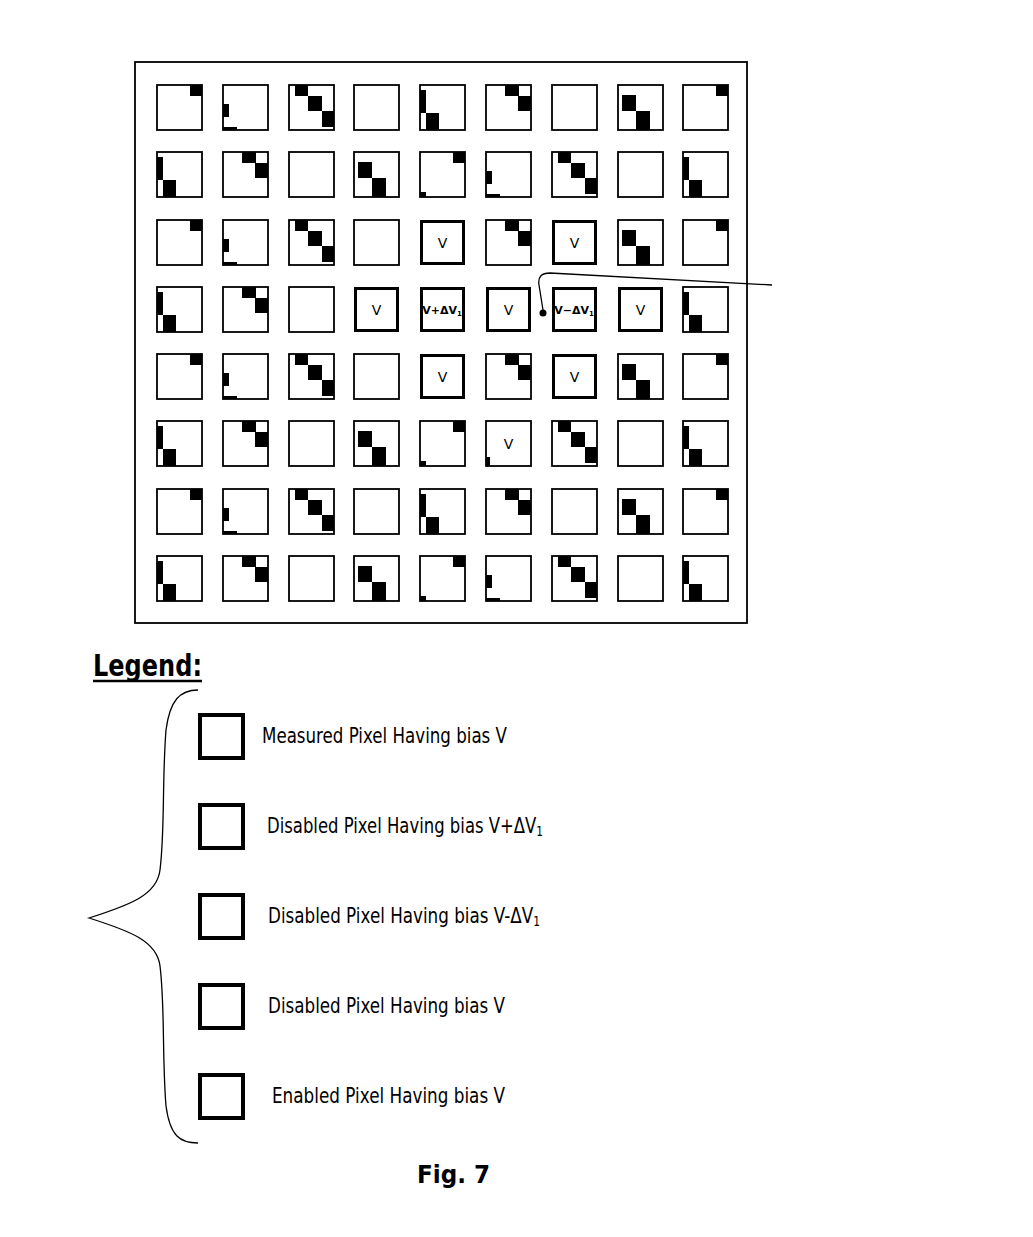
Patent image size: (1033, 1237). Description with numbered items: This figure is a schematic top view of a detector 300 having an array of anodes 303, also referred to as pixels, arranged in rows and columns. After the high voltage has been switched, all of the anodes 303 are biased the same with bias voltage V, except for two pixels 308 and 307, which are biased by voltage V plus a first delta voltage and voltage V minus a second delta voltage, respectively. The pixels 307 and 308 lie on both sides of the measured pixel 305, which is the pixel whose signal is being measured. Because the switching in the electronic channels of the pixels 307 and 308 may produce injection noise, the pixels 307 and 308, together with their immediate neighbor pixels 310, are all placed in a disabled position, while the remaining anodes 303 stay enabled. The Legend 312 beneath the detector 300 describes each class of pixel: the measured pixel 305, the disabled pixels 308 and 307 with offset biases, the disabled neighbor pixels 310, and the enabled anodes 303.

The detector 300 is at (488, 62).
The anode 303 is at (575, 85).
The measured pixel 305 is at (520, 318).
The pixel 307 is at (582, 319).
The pixel 308 is at (432, 322).
The immediate neighbor pixel 310 is at (441, 219).
The legend 312 is at (128, 902).